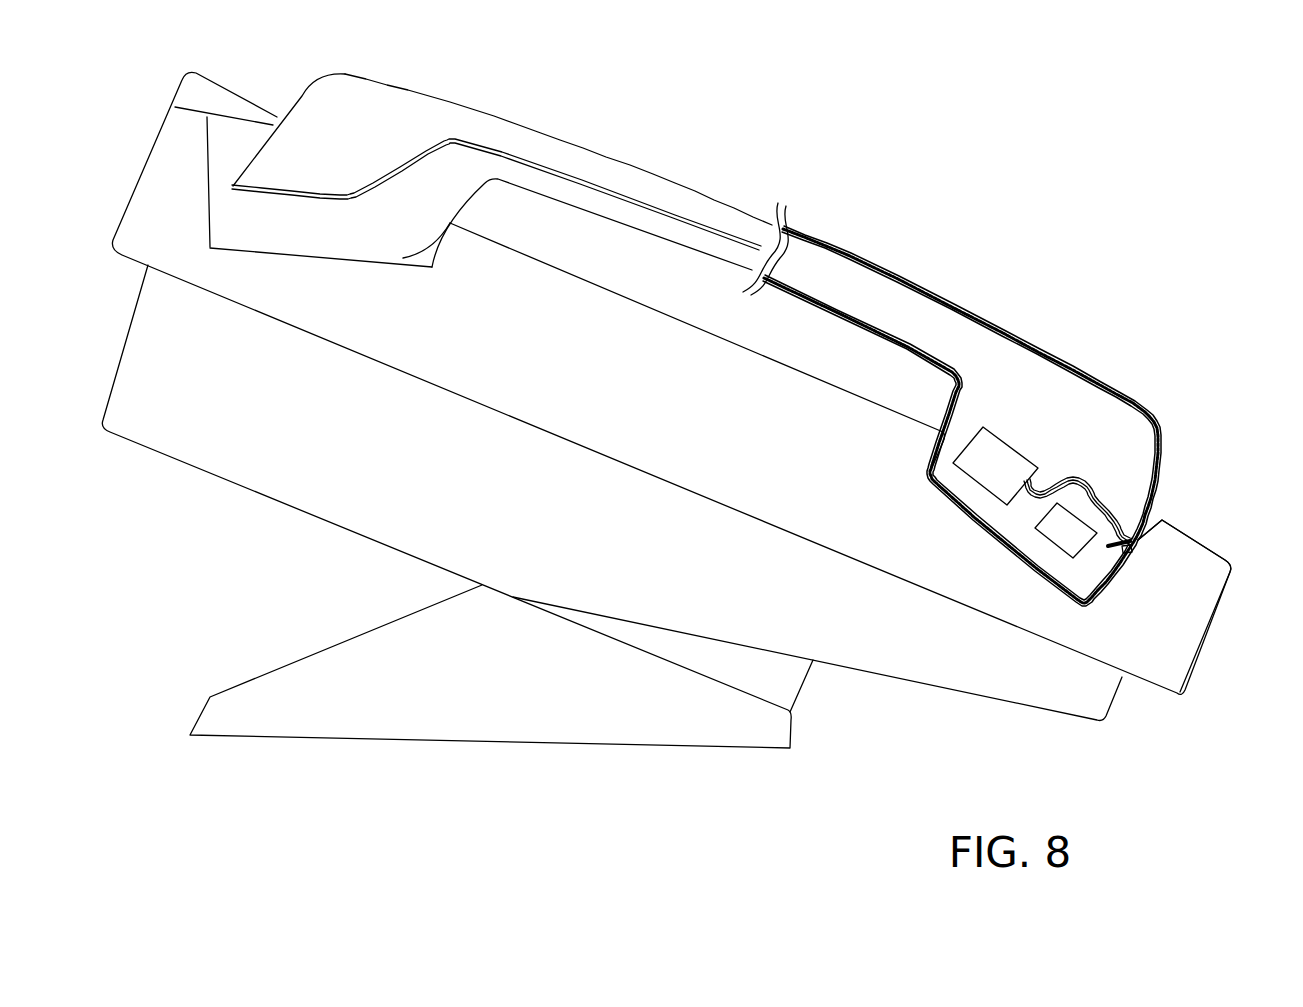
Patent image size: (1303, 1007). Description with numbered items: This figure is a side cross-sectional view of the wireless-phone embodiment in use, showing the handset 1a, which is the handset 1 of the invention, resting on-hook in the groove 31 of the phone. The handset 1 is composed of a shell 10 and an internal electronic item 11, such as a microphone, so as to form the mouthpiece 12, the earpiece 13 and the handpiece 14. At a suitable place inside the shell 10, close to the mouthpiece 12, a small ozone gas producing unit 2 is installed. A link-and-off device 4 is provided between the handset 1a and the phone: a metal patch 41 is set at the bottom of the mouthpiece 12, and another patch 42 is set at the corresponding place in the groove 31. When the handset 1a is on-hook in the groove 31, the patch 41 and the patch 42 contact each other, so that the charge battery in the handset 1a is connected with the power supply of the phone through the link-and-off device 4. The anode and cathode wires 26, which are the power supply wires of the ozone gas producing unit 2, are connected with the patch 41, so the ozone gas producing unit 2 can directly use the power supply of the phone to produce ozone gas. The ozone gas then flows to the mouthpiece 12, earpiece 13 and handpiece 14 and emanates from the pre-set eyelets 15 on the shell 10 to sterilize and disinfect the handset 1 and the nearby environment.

The handset 1a is at (666, 410).
The handset 1 is at (867, 228).
The ozone gas producing unit 2 is at (998, 460).
The link-and-off device 4 is at (1157, 510).
The shell 10 is at (957, 323).
The internal electronic item 11 is at (1080, 495).
The mouthpiece 12 is at (1130, 480).
The earpiece 13 is at (355, 133).
The handpiece 14 is at (672, 193).
The eyelets 15 is at (803, 233).
The anode and cathode wires 26 is at (1066, 530).
The groove 31 is at (227, 157).
The metal patch 41 is at (1135, 543).
The patch 42 is at (1137, 548).